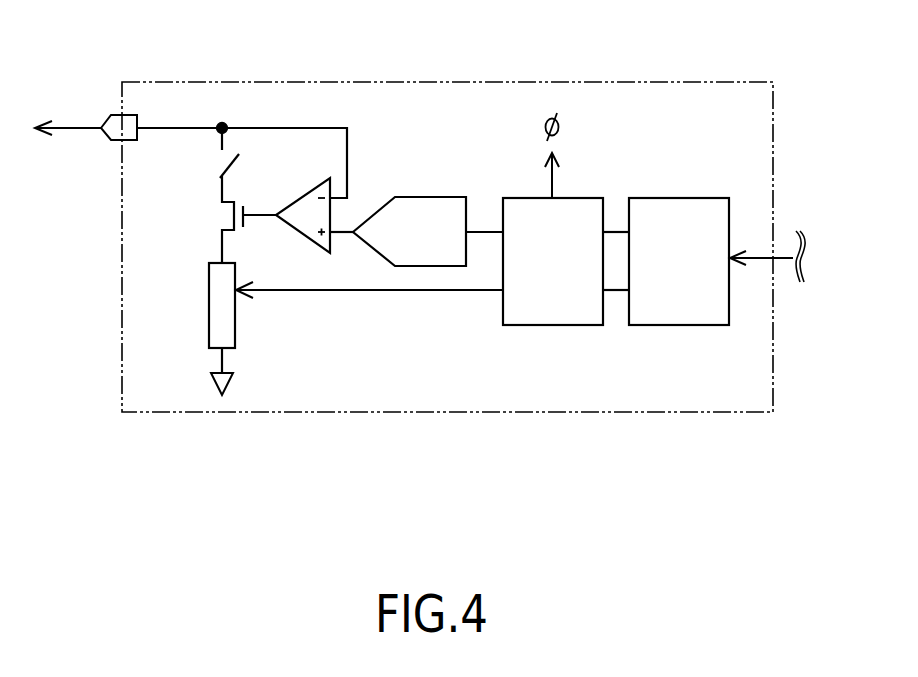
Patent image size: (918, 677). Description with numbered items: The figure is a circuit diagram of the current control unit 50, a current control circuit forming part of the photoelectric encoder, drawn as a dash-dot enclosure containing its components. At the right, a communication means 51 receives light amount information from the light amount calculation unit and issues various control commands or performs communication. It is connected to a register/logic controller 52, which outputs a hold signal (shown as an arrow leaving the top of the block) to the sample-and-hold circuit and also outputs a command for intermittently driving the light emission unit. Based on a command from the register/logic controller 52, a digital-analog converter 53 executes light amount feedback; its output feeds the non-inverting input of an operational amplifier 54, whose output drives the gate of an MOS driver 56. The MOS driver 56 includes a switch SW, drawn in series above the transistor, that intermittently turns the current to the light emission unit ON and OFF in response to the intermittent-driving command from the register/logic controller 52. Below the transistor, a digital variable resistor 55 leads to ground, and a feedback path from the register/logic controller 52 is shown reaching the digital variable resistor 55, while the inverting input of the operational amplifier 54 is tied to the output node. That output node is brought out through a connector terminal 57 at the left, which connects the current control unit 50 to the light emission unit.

The current control unit 50 is at (735, 82).
The communication means 51 is at (682, 325).
The register/logic controller 52 is at (552, 325).
The digital-analog converter 53 is at (426, 197).
The operational amplifier 54 is at (298, 226).
The digital variable resistor 55 is at (213, 318).
The MOS driver 56 is at (196, 212).
The connector terminal 57 is at (138, 140).
The switch SW is at (232, 172).